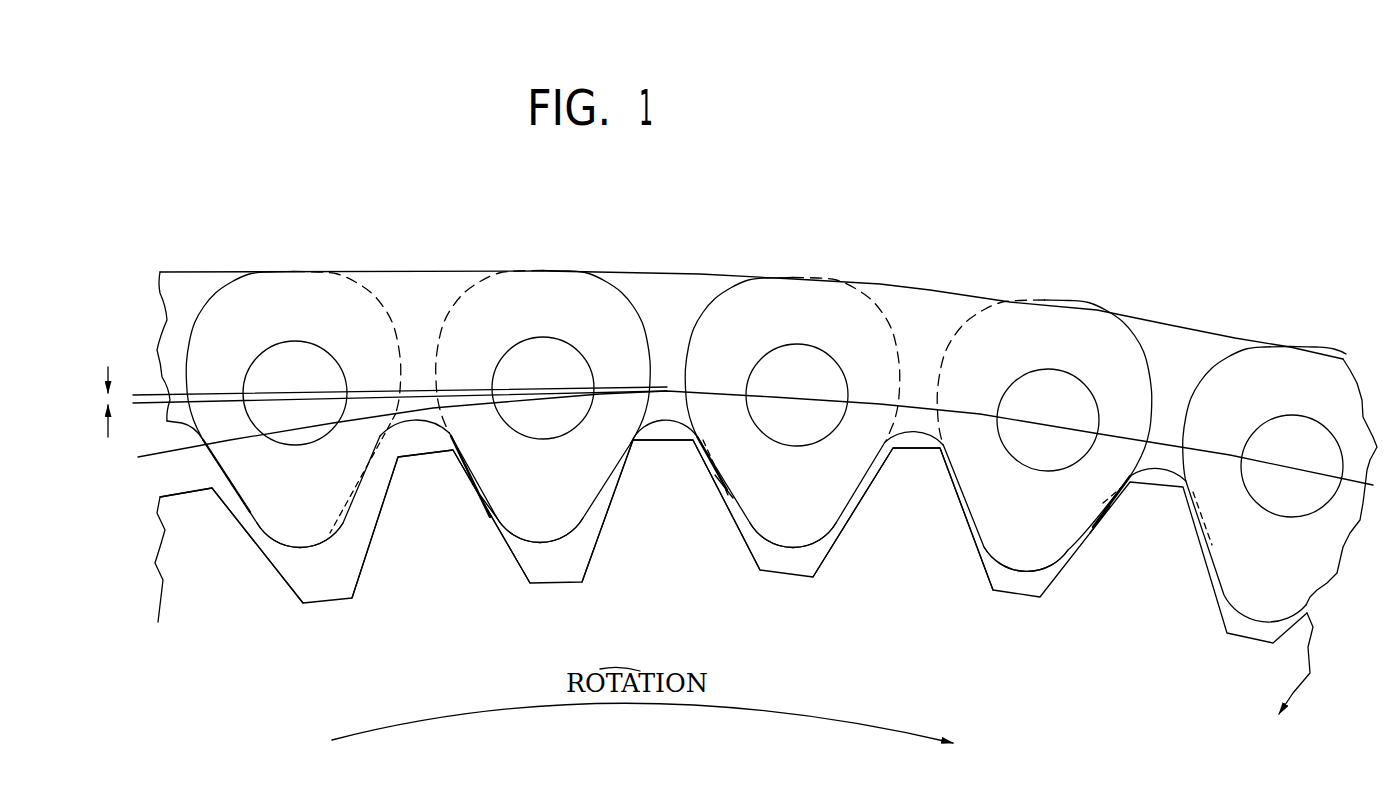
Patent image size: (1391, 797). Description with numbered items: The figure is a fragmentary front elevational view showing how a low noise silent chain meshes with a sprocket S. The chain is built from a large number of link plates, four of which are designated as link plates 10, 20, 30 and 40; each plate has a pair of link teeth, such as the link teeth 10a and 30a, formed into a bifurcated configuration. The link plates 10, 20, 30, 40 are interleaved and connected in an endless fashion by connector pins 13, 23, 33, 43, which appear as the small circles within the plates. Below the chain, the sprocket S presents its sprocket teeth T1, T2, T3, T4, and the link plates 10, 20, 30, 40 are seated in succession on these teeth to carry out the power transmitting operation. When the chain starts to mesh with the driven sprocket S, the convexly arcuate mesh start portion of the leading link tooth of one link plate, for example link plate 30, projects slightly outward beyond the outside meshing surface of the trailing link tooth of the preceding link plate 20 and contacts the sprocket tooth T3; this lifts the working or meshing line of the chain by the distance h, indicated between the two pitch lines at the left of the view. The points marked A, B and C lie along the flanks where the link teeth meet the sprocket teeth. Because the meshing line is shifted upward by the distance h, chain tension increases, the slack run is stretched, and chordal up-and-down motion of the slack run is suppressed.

The link plate 10 is at (942, 286).
The link plate 20 is at (670, 268).
The link plate 30 is at (423, 268).
The link plate 40 is at (198, 268).
The connector pin 13 is at (1055, 369).
The connector pin 23 is at (802, 344).
The connector pin 33 is at (544, 337).
The connector pin 43 is at (305, 341).
The link teeth 10a is at (823, 517).
The link teeth 30a is at (290, 513).
The distance h is at (122, 392).
The sprocket tooth T1 is at (933, 549).
The sprocket tooth T2 is at (684, 552).
The sprocket tooth T3 is at (452, 551).
The sprocket tooth T4 is at (222, 581).
The contact point A is at (490, 519).
The contact point B is at (725, 497).
The contact point C is at (1097, 533).
The sprocket S is at (660, 758).